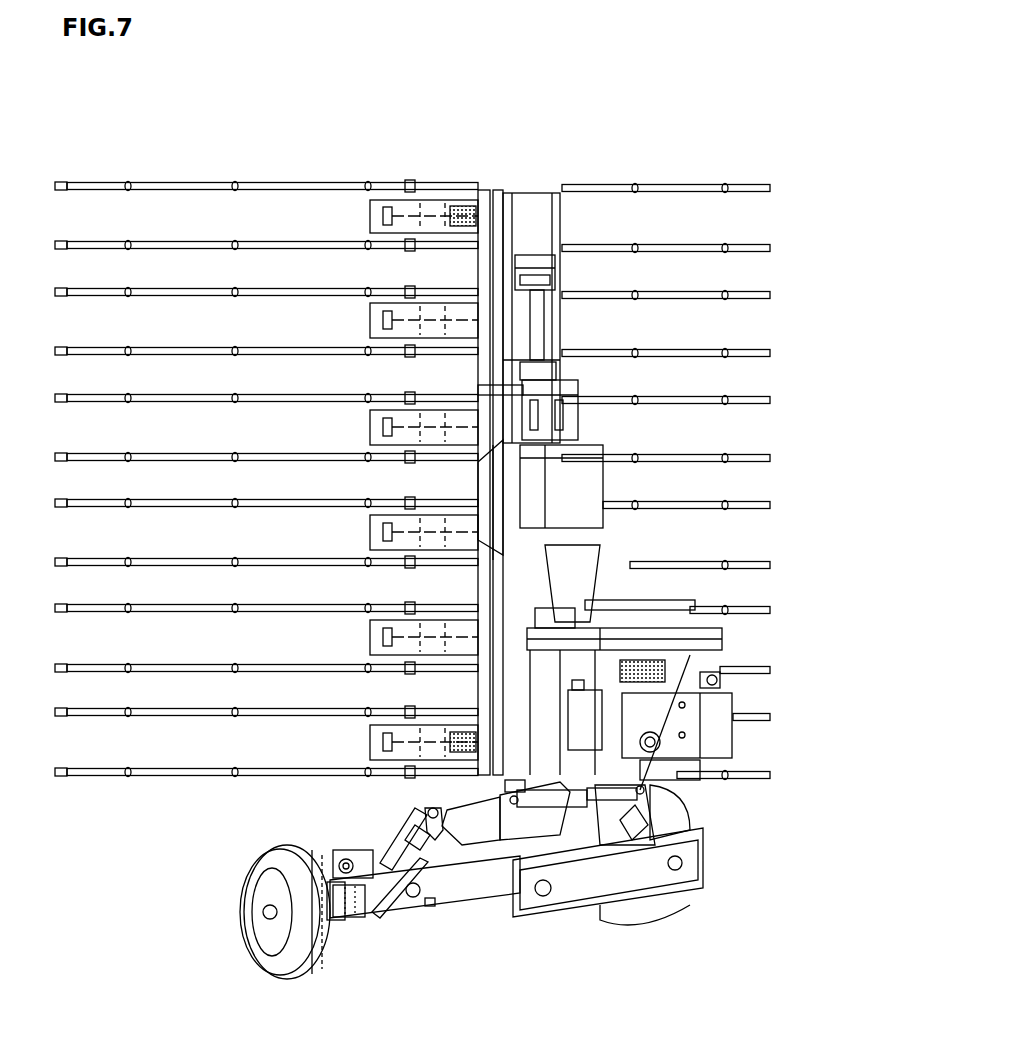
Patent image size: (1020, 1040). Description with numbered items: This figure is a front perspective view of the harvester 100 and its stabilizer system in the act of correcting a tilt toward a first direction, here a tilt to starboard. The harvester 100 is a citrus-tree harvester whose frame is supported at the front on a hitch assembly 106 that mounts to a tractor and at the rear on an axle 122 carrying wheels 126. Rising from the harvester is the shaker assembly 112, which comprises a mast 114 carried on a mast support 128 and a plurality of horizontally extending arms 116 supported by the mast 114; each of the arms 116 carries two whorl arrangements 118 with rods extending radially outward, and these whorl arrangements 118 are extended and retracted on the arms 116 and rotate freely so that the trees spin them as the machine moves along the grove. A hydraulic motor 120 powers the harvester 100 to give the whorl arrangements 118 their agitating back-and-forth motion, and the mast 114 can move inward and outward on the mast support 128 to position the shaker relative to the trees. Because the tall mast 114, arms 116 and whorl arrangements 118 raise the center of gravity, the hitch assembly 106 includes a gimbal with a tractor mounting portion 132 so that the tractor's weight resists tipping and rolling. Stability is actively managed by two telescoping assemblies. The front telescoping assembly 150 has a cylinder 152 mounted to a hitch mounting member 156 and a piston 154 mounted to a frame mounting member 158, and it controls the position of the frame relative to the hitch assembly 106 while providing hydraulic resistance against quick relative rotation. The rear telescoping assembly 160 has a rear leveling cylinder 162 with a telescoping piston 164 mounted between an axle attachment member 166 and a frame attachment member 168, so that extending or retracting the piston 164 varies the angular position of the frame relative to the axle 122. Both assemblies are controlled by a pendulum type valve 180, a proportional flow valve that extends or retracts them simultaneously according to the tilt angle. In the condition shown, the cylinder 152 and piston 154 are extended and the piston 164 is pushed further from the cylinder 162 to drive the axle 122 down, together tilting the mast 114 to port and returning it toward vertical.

The harvester 100 is at (618, 133).
The hitch assembly 106 is at (508, 938).
The shaker assembly 112 is at (168, 808).
The mast 114 is at (542, 212).
The arms 116 is at (375, 226).
The whorl arrangements 118 is at (772, 190).
The hydraulic motor 120 is at (720, 707).
The axle 122 is at (438, 885).
The wheels 126 is at (256, 857).
The mast support 128 is at (585, 495).
The tractor mounting portion 132 is at (693, 871).
The telescoping assembly 150 is at (690, 794).
The cylinder 152 is at (560, 800).
The piston 154 is at (645, 808).
The hitch mounting member 156 is at (508, 822).
The frame mounting member 158 is at (622, 822).
The rear telescoping assembly 160 is at (376, 821).
The rear leveling cylinder 162 is at (408, 832).
The piston 164 is at (380, 895).
The axle attachment member 166 is at (353, 905).
The frame attachment member 168 is at (457, 815).
The pendulum type valve 180 is at (722, 683).